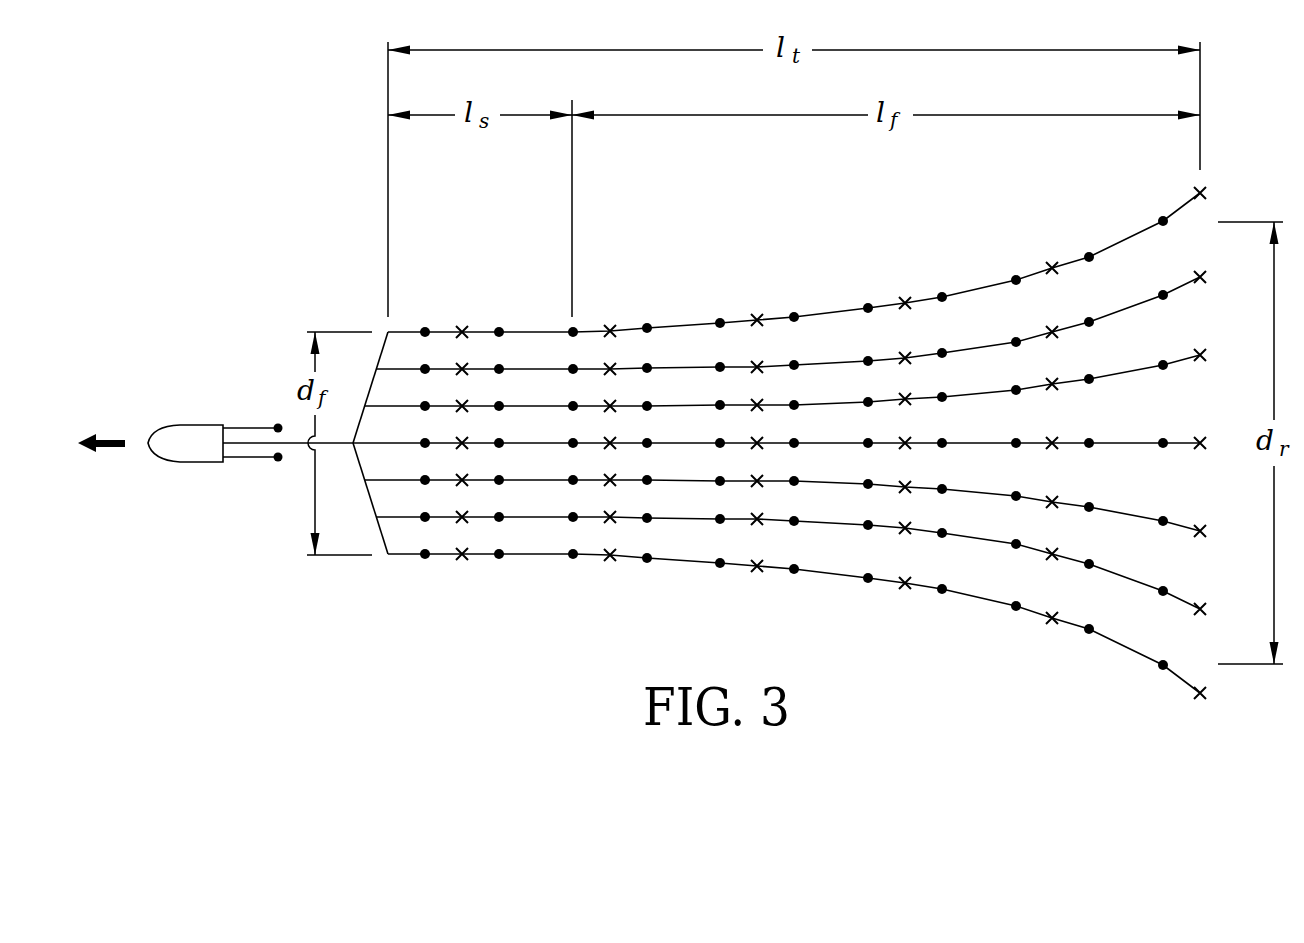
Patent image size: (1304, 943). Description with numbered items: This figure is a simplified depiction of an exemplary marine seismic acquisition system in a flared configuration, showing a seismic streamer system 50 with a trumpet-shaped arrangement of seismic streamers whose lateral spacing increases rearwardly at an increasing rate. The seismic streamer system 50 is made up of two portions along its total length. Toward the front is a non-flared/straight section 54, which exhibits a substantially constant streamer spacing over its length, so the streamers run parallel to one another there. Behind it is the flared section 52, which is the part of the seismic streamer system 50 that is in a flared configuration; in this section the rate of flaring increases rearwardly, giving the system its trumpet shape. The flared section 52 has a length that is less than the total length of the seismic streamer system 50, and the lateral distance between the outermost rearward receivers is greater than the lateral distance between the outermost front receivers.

The seismic streamer system 50 is at (642, 440).
The flared section 52 is at (885, 242).
The non-flared/straight section 54 is at (500, 258).